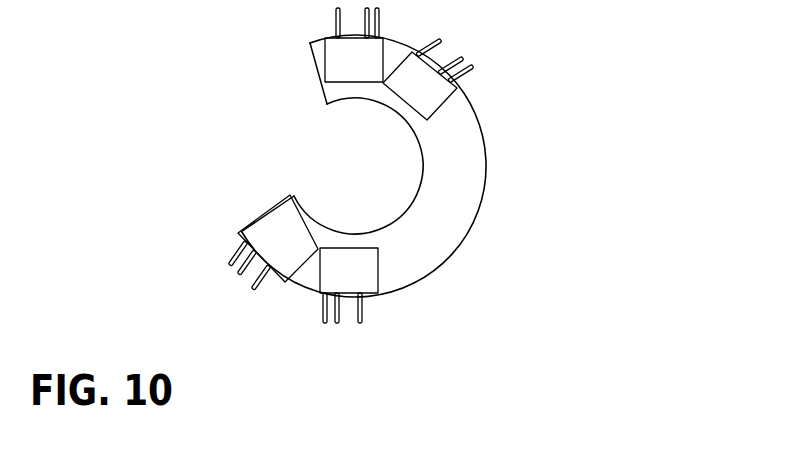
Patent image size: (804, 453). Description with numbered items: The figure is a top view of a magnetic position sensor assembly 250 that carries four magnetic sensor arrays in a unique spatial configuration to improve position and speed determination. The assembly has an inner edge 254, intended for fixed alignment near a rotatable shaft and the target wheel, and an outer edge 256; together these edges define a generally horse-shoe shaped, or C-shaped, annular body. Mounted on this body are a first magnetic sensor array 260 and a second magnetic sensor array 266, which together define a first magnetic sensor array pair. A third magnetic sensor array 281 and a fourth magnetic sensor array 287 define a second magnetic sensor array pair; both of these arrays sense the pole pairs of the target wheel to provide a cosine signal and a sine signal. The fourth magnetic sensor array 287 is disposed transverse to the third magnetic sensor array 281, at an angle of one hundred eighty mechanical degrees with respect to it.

The magnetic position sensor assembly 250 is at (555, 108).
The inner edge 254 is at (418, 172).
The outer edge 256 is at (487, 168).
The first magnetic sensor array 260 is at (345, 58).
The third magnetic sensor array 281 is at (430, 98).
The second magnetic sensor array 266 is at (363, 273).
The fourth magnetic sensor array 287 is at (270, 232).